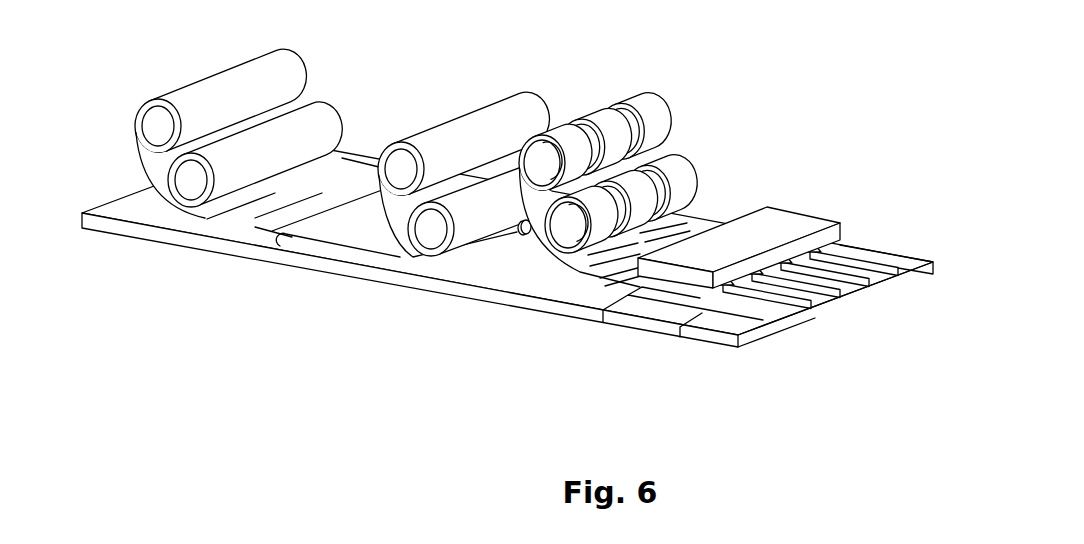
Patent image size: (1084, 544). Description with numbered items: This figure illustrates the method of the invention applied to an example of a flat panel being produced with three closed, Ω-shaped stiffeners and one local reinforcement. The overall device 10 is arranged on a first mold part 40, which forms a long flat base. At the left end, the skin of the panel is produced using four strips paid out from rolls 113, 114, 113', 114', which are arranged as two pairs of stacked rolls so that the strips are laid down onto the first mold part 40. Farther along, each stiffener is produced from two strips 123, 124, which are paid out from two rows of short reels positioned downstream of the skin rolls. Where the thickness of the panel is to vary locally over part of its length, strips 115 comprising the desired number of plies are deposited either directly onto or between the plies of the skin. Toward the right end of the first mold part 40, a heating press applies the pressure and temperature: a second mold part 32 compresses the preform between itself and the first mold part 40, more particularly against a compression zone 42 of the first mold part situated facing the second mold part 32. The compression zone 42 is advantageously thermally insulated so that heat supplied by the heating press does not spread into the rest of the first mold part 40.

The sensor assembly / substrate 10 is at (904, 241).
The second mold part 32 is at (830, 213).
The first mold part 40 is at (125, 228).
The compression zone 42 is at (633, 322).
The roll 113 is at (294, 153).
The roll 113' is at (457, 263).
The roll 114 is at (278, 90).
The roll 114' is at (472, 98).
The strips 115 is at (291, 238).
The strip 123 is at (701, 167).
The strip 124 is at (664, 97).